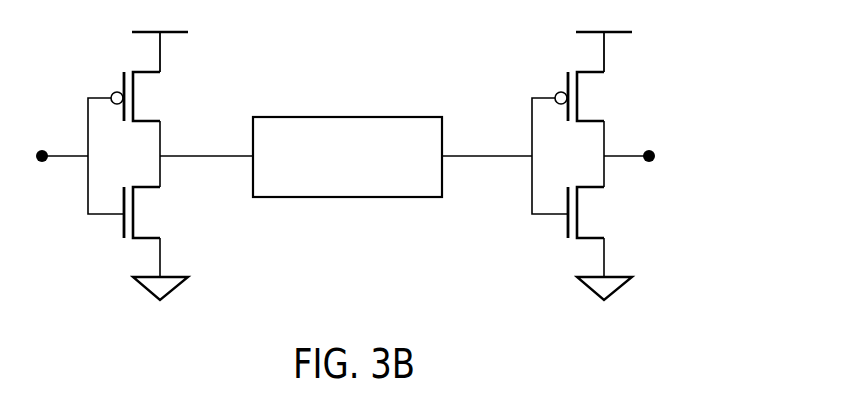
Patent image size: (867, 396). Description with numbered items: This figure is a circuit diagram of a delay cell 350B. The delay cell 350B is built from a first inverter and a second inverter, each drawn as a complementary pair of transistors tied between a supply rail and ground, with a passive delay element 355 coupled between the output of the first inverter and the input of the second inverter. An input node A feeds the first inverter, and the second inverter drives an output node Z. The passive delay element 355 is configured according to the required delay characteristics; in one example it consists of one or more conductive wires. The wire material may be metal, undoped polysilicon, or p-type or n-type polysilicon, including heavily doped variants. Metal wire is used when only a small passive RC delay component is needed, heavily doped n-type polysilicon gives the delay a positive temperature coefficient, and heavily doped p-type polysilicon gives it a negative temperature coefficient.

The delay cell 350B is at (409, 171).
The passive delay element 355 is at (405, 117).
The input node A is at (59, 140).
The output node Z is at (632, 140).